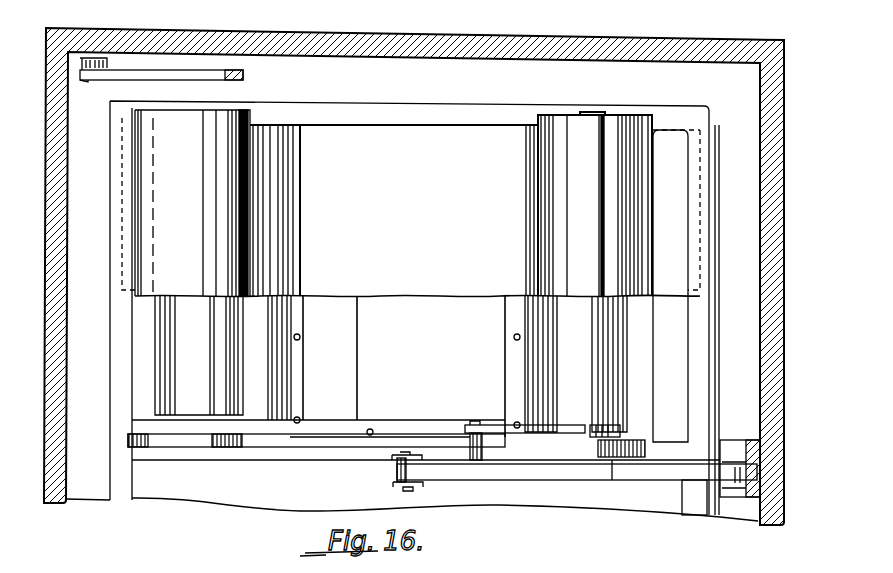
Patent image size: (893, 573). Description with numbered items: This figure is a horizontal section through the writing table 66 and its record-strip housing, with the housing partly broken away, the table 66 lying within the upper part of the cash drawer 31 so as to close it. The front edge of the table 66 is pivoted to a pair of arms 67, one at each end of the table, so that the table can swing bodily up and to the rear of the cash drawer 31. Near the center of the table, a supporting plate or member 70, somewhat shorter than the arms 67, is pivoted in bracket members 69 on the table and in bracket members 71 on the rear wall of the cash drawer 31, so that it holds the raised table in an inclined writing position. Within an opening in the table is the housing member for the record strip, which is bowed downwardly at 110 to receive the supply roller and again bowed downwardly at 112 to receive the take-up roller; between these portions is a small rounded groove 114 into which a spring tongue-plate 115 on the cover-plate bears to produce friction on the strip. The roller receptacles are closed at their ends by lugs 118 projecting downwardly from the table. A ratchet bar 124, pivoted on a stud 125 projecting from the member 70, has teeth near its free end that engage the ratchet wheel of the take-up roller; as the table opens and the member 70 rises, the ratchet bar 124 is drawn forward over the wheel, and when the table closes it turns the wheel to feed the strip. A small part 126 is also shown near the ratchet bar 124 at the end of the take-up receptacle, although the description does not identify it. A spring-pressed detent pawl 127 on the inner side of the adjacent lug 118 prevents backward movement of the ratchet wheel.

The cash drawer 31 is at (394, 38).
The writing table 66 is at (412, 295).
The arms 67 is at (246, 77).
The bracket members 69 is at (406, 484).
The supporting plate or member 70 is at (573, 468).
The bracket members 71 is at (748, 493).
The bowed portion 110 is at (192, 262).
The bowed portion 112 is at (565, 217).
The rounded groove 114 is at (283, 155).
The spring tongue-plate 115 is at (290, 352).
The lugs 118 is at (214, 448).
The ratchet bar 124 is at (512, 428).
The stud 125 is at (483, 451).
The block 126 is at (622, 432).
The detent pawl 127 is at (618, 483).